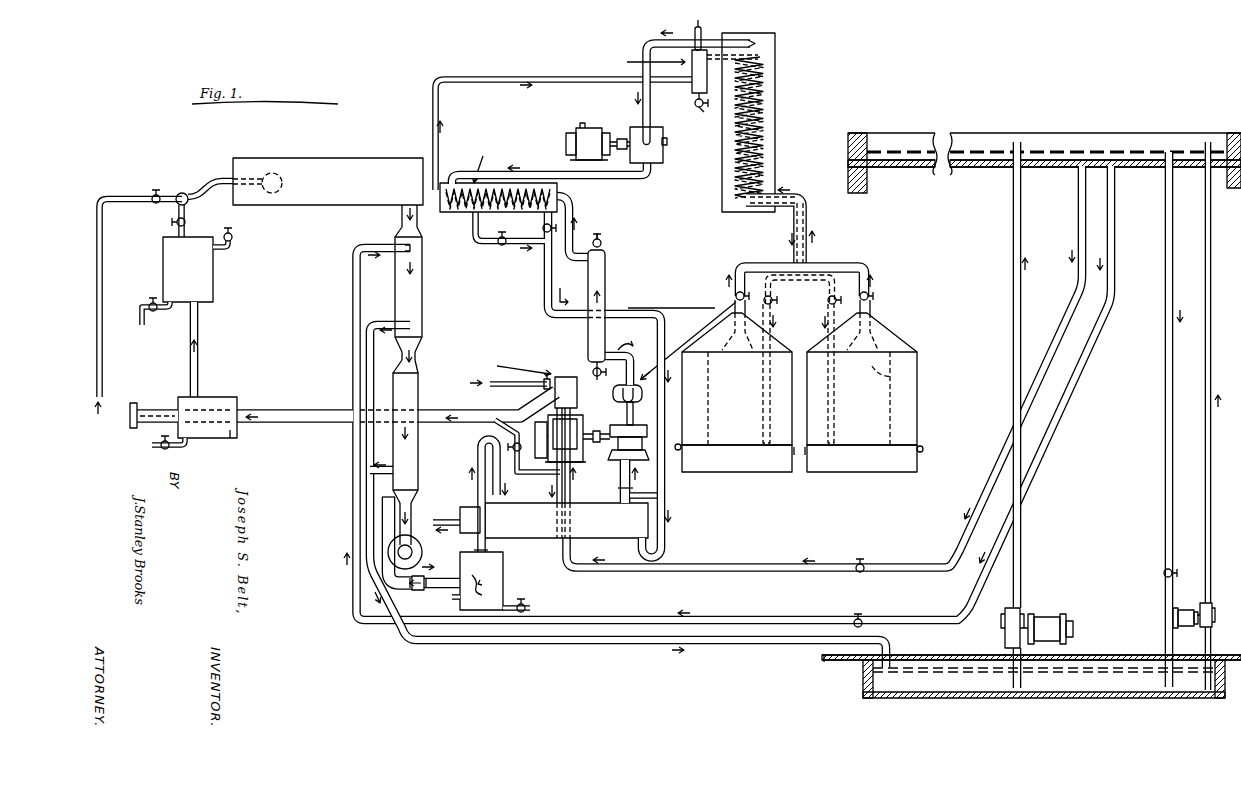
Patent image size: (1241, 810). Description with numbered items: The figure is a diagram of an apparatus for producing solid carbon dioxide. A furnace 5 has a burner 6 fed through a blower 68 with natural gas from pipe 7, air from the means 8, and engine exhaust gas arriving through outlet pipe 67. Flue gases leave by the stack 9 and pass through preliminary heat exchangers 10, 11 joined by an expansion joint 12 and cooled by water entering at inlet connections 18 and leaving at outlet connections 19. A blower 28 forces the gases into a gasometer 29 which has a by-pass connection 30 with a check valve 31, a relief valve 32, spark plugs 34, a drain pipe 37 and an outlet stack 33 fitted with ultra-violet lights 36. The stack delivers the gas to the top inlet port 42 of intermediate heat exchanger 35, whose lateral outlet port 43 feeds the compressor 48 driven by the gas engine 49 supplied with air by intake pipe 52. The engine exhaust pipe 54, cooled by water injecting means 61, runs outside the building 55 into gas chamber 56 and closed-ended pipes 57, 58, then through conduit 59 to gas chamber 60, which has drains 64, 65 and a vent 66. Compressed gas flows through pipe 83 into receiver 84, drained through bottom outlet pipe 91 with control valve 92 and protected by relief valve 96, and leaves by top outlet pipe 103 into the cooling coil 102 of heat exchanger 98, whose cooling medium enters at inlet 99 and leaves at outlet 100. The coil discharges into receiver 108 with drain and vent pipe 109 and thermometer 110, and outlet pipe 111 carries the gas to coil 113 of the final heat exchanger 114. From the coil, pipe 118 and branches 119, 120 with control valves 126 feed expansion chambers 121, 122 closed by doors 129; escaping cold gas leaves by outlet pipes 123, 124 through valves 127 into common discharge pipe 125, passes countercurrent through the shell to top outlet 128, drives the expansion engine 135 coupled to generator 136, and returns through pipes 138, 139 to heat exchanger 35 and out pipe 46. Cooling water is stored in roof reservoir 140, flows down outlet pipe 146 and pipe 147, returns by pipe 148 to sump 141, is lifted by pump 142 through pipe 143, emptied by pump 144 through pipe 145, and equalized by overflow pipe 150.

The furnace 5 is at (343, 158).
The burner 6 is at (276, 172).
The pipe 7 is at (100, 327).
The air supply means 8 is at (152, 190).
The stack 9 is at (419, 215).
The preliminary heat exchanger 10 is at (395, 273).
The preliminary heat exchanger 11 is at (420, 404).
The expansion joint 12 is at (418, 360).
The inlet connection 18 is at (391, 246).
The outlet connection 19 is at (394, 322).
The blower 28 is at (418, 538).
The gasometer 29 is at (503, 578).
The by-pass connection 30 is at (383, 522).
The check valve 31 is at (406, 625).
The relief valve 32 is at (464, 553).
The outlet stack 33 is at (478, 458).
The spark plugs 34 is at (455, 600).
The intermediate heat exchanger 35 is at (600, 508).
The ultra-violet ray lights 36 is at (502, 455).
The bottom drain pipe 37 is at (520, 612).
The top inlet port 42 is at (492, 500).
The lateral outlet port 43 is at (665, 497).
The central outlet pipe 46 is at (460, 507).
The compressor 48 is at (642, 404).
The internal combustion natural gas engine 49 is at (567, 377).
The air intake pipe 52 is at (522, 387).
The exhaust pipe 54 is at (315, 411).
The building 55 is at (868, 189).
The gas chamber 56 is at (236, 436).
The pipes 57 is at (165, 395).
The closed outer end 58 is at (130, 421).
The conduit 59 is at (200, 338).
The gas chamber 60 is at (177, 253).
The water injecting means 61 is at (527, 446).
The drain facilities 64 is at (184, 441).
The drain facilities 65 is at (154, 324).
The valve-controlled vent 66 is at (236, 250).
The outlet pipe 67 is at (186, 226).
The blower 68 is at (188, 189).
The pipe 83 is at (621, 356).
The receiver 84 is at (607, 295).
The bottom outlet pipe 91 is at (606, 367).
The control valve 92 is at (613, 386).
The pressure relief valve 96 is at (601, 238).
The intermediate heat exchanger 98 is at (470, 213).
The cooling medium inlet 99 is at (433, 157).
The cooling medium outlet 100 is at (561, 213).
The cooling coil 102 is at (521, 192).
The top outlet pipe 103 is at (568, 244).
The receiver 108 is at (692, 88).
The drain and vent pipe 109 is at (700, 108).
The thermometer 110 is at (699, 28).
The outlet pipe 111 is at (706, 44).
The coil 113 is at (762, 55).
The final heat exchanger 114 is at (773, 136).
The pipe 118 is at (808, 216).
The branch pipe 119 is at (771, 343).
The branch pipe 120 is at (828, 313).
The expansion chamber 121 is at (736, 428).
The expansion chamber 122 is at (893, 376).
The outlet pipe 123 is at (687, 342).
The outlet pipe 124 is at (876, 306).
The common discharge pipe 125 is at (812, 253).
The control valve 126 is at (830, 301).
The valve 127 is at (737, 293).
The top outlet 128 is at (642, 52).
The heat insulated door 129 is at (763, 460).
The expansion engine 135 is at (653, 153).
The electrical generator 136 is at (562, 133).
The valve-controlled pipe 138 is at (542, 228).
The valve controlled pipe 139 is at (482, 230).
The reservoir 140 is at (1148, 142).
The sump 141 is at (860, 684).
The motor-operated pump 142 is at (1020, 617).
The pipe 143 is at (1013, 308).
The motor-operated pump 144 is at (1200, 628).
The pipe 145 is at (1205, 506).
The outlet pipe 146 is at (1066, 316).
The pipe 147 is at (1058, 420).
The pipe 148 is at (740, 645).
The overflow pipe 150 is at (1165, 381).